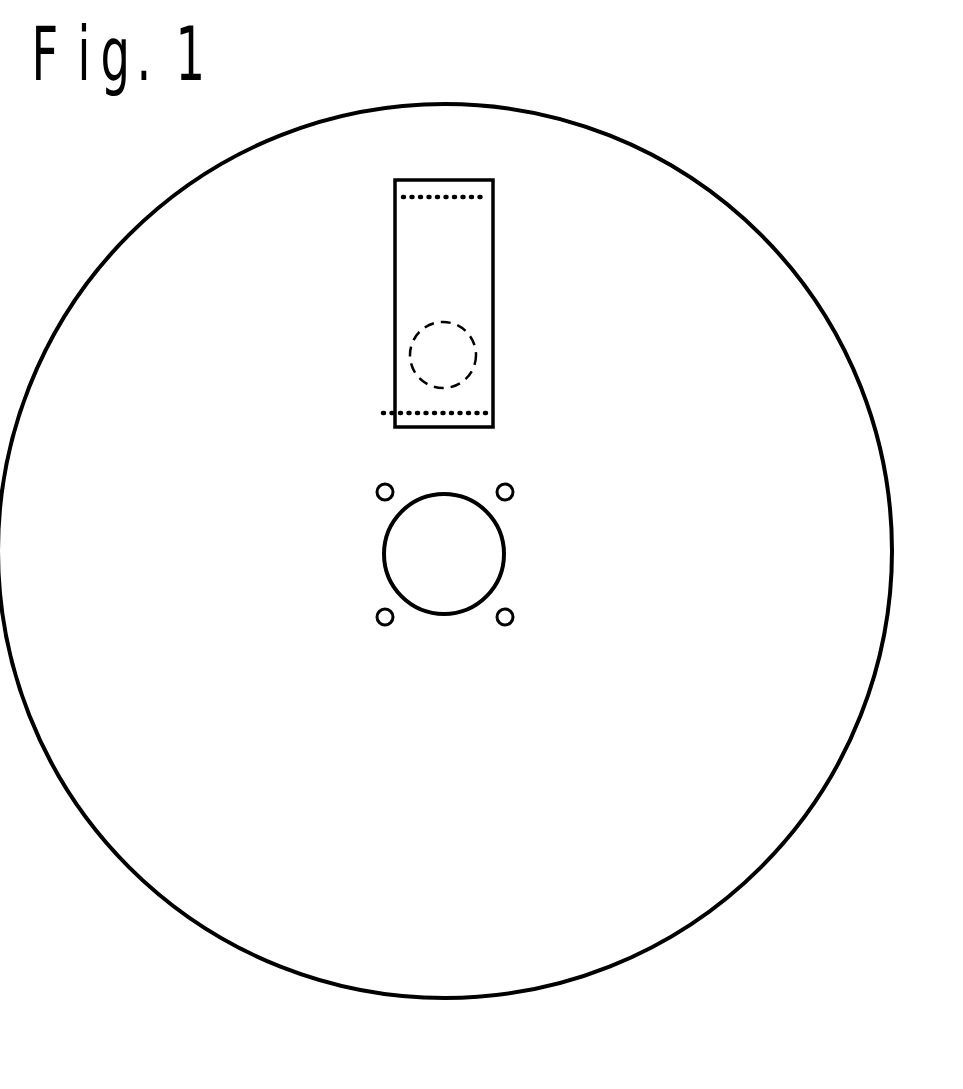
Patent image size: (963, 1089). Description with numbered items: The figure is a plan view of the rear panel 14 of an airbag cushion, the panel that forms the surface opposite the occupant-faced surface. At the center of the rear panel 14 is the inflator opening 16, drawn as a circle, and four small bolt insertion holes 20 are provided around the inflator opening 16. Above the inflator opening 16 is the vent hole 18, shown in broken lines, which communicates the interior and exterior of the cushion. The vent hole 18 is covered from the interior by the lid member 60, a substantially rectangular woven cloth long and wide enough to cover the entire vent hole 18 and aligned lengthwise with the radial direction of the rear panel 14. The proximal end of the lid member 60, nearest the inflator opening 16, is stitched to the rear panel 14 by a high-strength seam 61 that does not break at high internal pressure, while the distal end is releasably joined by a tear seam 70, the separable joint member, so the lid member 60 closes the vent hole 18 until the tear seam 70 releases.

The rear panel 14 is at (461, 147).
The inflator opening 16 is at (503, 552).
The vent hole 18 is at (478, 323).
The bolt insertion holes 20 is at (376, 491).
The lid member 60 is at (394, 292).
The seam 61 is at (500, 410).
The tear seam 70 is at (472, 195).